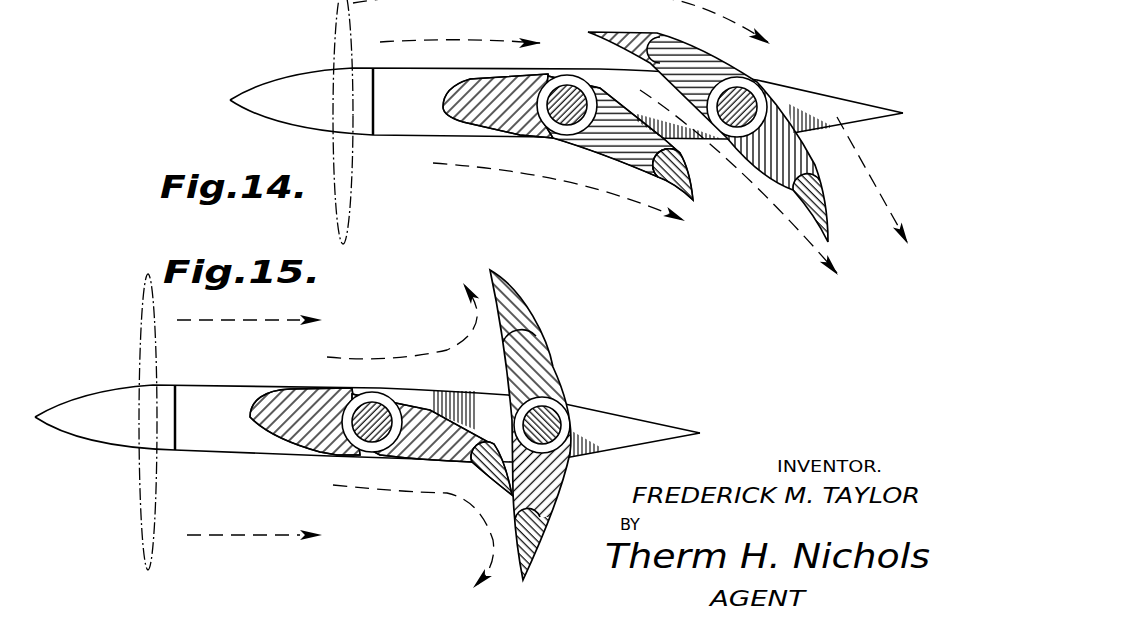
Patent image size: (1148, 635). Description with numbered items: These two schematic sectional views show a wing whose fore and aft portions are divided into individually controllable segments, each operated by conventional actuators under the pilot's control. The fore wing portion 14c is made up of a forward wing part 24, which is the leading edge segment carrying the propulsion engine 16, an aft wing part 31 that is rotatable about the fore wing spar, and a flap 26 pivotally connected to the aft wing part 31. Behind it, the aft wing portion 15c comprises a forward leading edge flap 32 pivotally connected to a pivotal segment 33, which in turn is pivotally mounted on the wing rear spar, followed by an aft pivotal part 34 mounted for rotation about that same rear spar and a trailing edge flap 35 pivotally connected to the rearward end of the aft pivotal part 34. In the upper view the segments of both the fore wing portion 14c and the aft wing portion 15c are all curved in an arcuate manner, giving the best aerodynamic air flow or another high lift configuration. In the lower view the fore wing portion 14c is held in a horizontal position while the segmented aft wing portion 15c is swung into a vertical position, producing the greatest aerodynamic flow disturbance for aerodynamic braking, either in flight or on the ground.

In FIG. 14, the propulsion engine 16 is at (410, 103).
In FIG. 15, the propulsion engine 16 is at (208, 421).
In FIG. 14, the forward wing part 24 is at (466, 90).
In FIG. 15, the forward wing part 24 is at (288, 402).
In FIG. 14, the aft wing part 31 is at (570, 136).
In FIG. 15, the aft wing part 31 is at (404, 455).
In FIG. 14, the fore wing portion 14c is at (632, 88).
In FIG. 15, the fore wing portion 14c is at (425, 397).
In FIG. 14, the flap 26 is at (689, 202).
In FIG. 15, the flap 26 is at (486, 468).
In FIG. 14, the forward leading edge flap 32 is at (610, 50).
In FIG. 15, the forward leading edge flap 32 is at (519, 336).
In FIG. 14, the pivotal segment 33 is at (703, 62).
In FIG. 15, the pivotal segment 33 is at (540, 377).
In FIG. 14, the aft wing portion 15c is at (710, 140).
In FIG. 15, the aft wing portion 15c is at (561, 425).
In FIG. 14, the aft pivotal part 34 is at (775, 168).
In FIG. 15, the aft pivotal part 34 is at (535, 512).
In FIG. 14, the trailing edge flap 35 is at (815, 217).
In FIG. 15, the trailing edge flap 35 is at (530, 554).